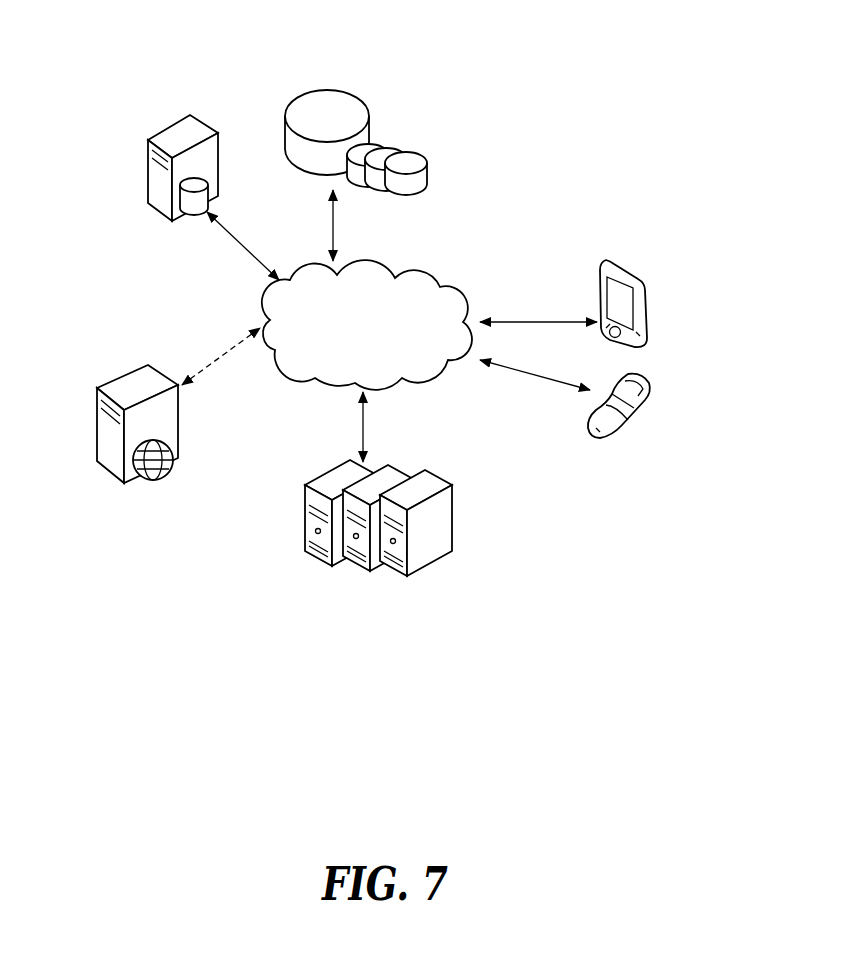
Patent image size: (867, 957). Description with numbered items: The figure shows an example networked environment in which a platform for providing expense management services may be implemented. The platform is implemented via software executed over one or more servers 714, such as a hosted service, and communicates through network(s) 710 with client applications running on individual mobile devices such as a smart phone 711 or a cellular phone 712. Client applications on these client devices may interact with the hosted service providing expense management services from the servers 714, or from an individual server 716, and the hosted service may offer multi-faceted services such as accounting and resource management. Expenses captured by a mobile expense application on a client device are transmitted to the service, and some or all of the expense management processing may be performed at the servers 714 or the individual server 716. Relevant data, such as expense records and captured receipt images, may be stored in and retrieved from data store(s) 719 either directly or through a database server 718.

The network(s) 710 is at (370, 248).
The smart phone 711 is at (660, 262).
The cellular phone 712 is at (652, 374).
The servers 714 is at (330, 463).
The individual server 716 is at (115, 373).
The database server 718 is at (183, 222).
The data store(s) 719 is at (347, 66).